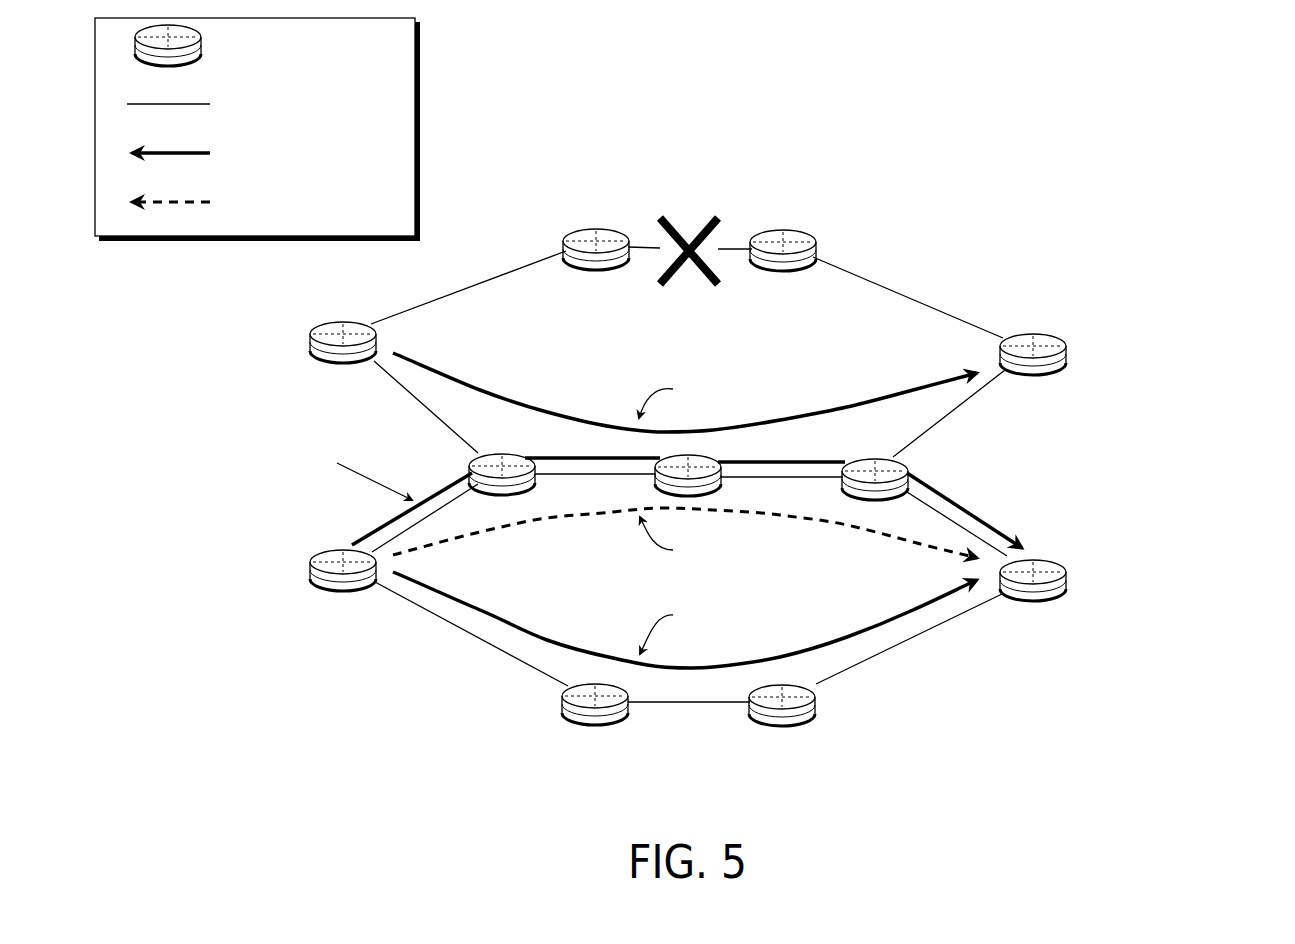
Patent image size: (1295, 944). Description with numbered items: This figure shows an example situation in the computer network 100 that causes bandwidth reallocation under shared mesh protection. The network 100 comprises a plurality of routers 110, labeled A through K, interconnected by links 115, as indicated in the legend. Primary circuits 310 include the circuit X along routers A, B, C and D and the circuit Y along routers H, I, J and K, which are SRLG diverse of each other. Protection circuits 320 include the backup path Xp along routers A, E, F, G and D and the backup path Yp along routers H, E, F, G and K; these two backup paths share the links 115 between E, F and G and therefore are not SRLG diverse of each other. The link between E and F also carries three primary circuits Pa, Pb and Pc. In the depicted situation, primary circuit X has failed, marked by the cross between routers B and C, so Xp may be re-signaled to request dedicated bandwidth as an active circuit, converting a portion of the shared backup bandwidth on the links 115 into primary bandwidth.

The computer network 100 is at (1186, 92).
The routers 110 is at (255, 48).
The links 115 is at (232, 105).
The primary circuits 310 is at (260, 153).
The protection circuits 320 is at (253, 200).